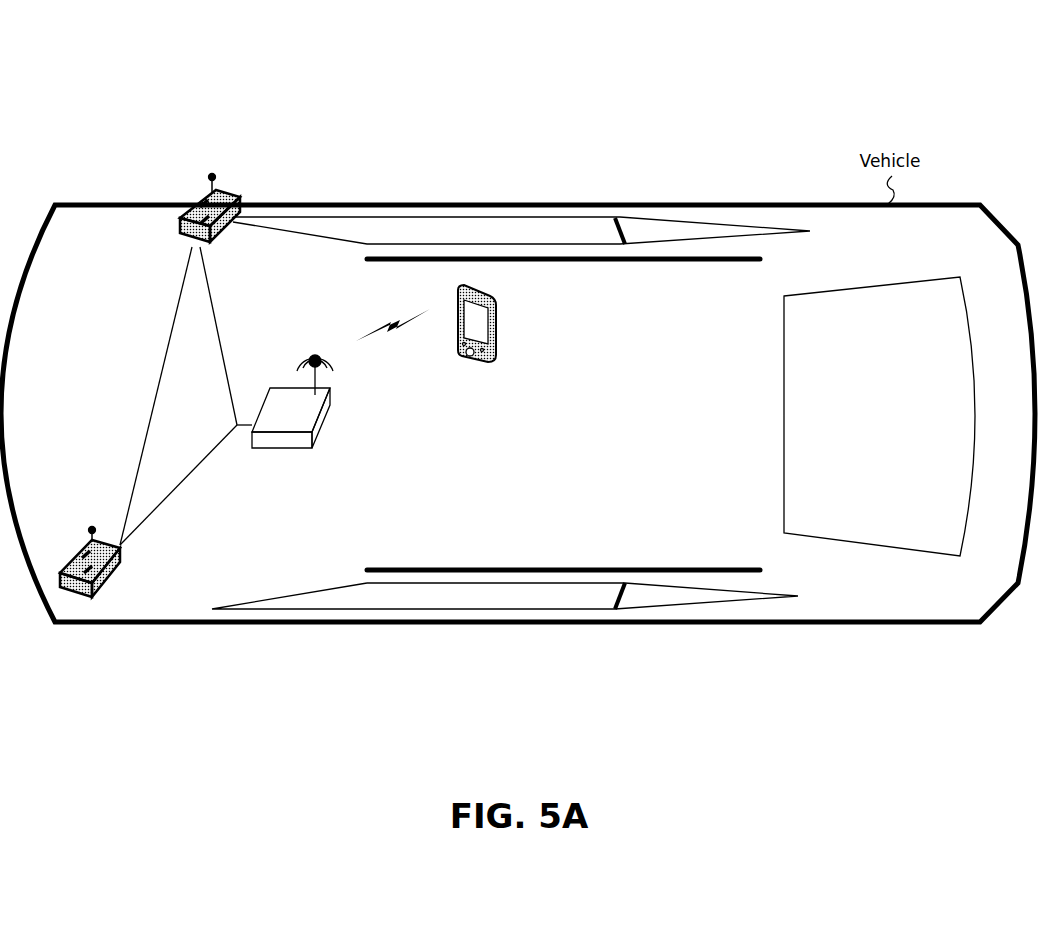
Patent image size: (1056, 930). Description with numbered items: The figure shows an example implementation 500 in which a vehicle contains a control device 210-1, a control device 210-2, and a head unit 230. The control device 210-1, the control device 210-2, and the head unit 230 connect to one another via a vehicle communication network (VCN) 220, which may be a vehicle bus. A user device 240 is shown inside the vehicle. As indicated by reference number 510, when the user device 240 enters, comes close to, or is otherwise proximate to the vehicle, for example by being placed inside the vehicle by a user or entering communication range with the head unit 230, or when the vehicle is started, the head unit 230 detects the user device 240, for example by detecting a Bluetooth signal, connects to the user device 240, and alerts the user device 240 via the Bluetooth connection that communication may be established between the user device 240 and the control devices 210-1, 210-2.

The example implementation 500 is at (80, 50).
The control device 210-2 is at (189, 169).
The control device 210-1 is at (50, 521).
The vehicle communication network (VCN) 220 is at (178, 389).
The head unit 230 is at (260, 493).
The user device 240 is at (460, 412).
The reference number 510 is at (316, 497).